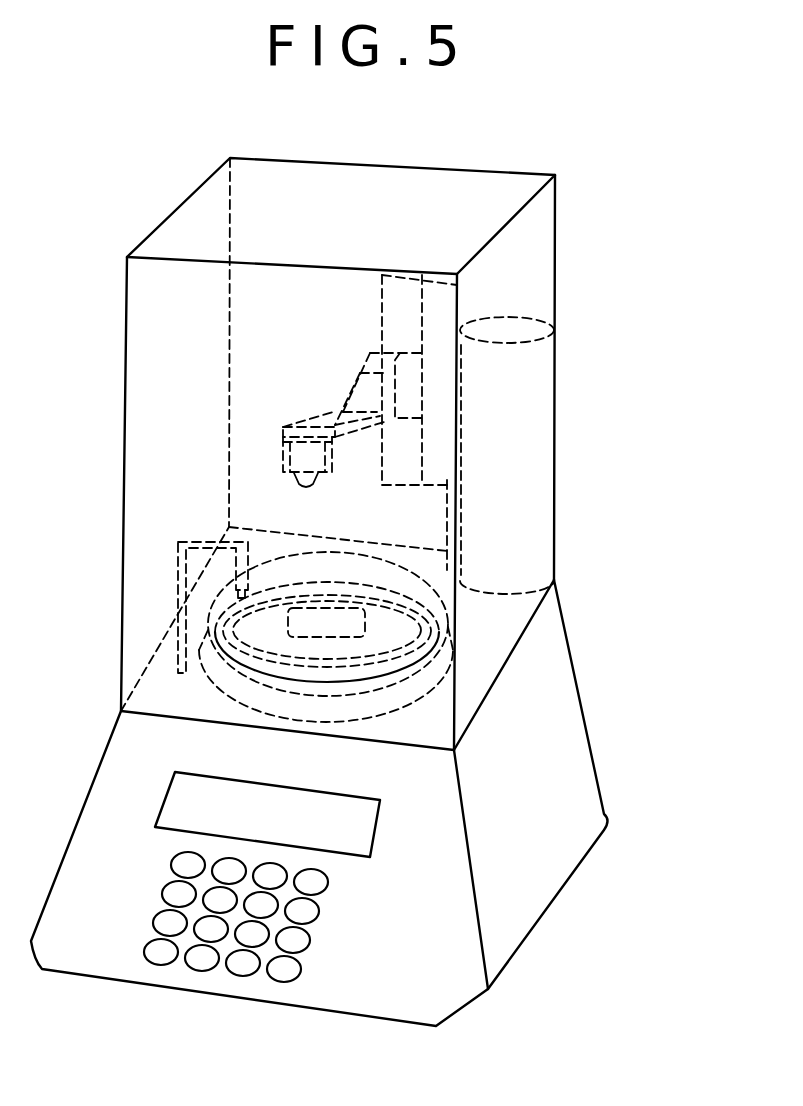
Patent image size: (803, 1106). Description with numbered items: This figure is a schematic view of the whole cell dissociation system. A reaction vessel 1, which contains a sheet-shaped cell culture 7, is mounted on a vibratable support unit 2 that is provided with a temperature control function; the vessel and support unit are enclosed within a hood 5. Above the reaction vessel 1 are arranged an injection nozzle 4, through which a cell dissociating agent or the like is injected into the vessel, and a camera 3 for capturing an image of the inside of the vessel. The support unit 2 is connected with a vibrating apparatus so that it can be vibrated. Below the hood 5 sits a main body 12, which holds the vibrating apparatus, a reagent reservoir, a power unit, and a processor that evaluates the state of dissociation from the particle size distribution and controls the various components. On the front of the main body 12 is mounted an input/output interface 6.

The reaction vessel 1 is at (212, 641).
The support unit 2 is at (417, 706).
The camera 3 is at (297, 481).
The injection nozzle 4 is at (178, 558).
The hood 5 is at (556, 236).
The input/output interface 6 is at (345, 917).
The sheet-shaped cell culture 7 is at (288, 625).
The main body 12 is at (544, 827).